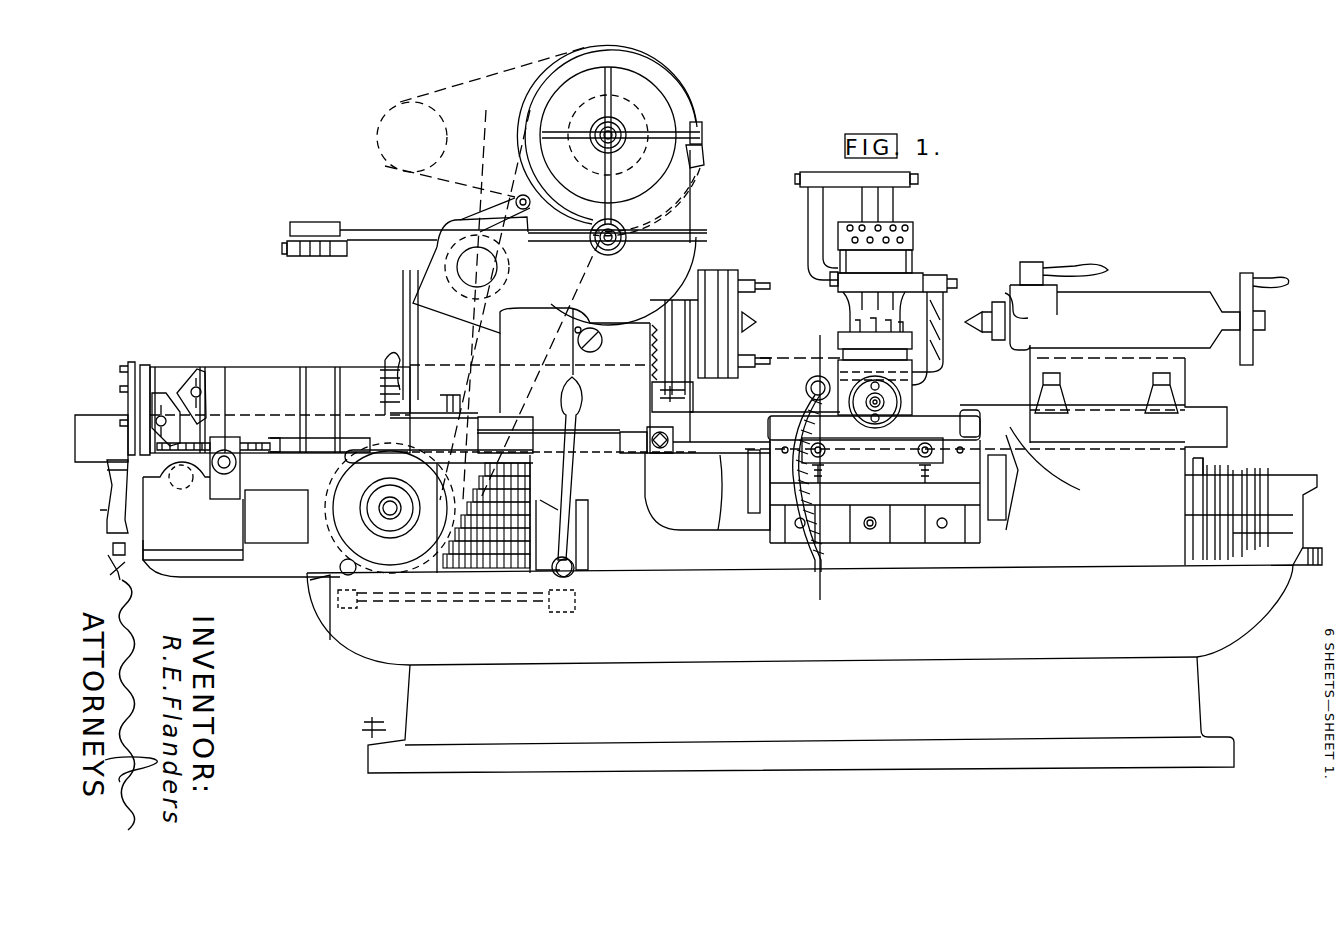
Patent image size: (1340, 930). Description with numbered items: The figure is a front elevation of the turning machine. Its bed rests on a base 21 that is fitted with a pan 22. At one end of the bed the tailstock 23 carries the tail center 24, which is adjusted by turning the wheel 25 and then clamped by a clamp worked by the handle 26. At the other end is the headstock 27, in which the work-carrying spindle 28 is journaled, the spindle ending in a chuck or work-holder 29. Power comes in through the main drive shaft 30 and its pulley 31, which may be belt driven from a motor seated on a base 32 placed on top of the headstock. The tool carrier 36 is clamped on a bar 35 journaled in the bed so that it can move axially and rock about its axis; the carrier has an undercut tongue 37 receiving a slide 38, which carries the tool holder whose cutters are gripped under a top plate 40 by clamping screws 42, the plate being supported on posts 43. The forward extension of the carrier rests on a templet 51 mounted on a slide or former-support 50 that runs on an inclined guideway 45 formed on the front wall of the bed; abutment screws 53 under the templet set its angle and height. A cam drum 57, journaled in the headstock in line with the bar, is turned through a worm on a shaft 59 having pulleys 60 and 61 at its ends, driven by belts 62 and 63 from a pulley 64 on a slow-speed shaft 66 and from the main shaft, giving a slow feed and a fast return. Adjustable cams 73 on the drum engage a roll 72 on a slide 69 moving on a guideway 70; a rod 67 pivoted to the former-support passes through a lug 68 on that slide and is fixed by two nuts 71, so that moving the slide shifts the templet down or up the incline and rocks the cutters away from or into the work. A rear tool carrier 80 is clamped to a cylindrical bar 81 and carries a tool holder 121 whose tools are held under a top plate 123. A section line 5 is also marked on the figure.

The section line 5 is at (817, 470).
The base 21 is at (798, 715).
The pan 22 is at (800, 615).
The tailstock 23 is at (1122, 425).
The tail center 24 is at (982, 303).
The wheel 25 is at (1252, 273).
The handle 26 is at (1060, 268).
The headstock 27 is at (538, 380).
The work-carrying spindle 28 is at (410, 318).
The chuck or work-holder 29 is at (725, 275).
The main drive shaft 30 is at (618, 124).
The pulley 31 is at (652, 62).
The base 32 is at (396, 230).
The bar 35 is at (1166, 496).
The tool carrier 36 is at (805, 392).
The undercut tongue or guideway 37 is at (850, 392).
The slide 38 is at (912, 380).
The top plate 40 is at (852, 330).
The clamping screws 42 is at (905, 310).
The posts 43 is at (838, 340).
The inclined undercut guideway or tongue 45 is at (995, 525).
The slide or former-support 50 is at (740, 520).
The templet 51 is at (872, 449).
The abutment screws 53 is at (826, 475).
The cam drum 57 is at (270, 368).
The shaft 59 is at (390, 518).
The pulley 60 is at (330, 570).
The pulley 61 is at (355, 530).
The belt 62 is at (392, 362).
The belt 63 is at (540, 385).
The pulley 64 is at (515, 200).
The shaft 66 is at (497, 268).
The rod 67 is at (314, 448).
The lug 68 is at (232, 442).
The slide 69 is at (193, 518).
The guideway 70 is at (270, 537).
The nuts 71 is at (207, 437).
The roll 72 is at (181, 489).
The adjustable cams 73 is at (180, 375).
The rear tool carrier 80 is at (880, 268).
The cylindrical bar 81 is at (960, 340).
The tool holder 121 is at (912, 262).
The top plate 123 is at (877, 278).